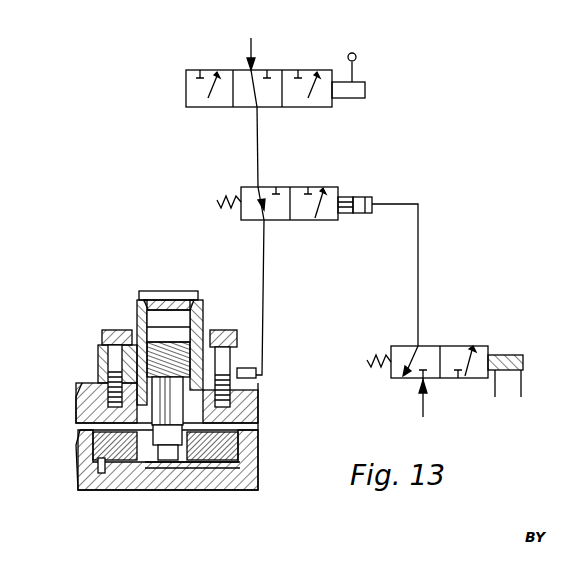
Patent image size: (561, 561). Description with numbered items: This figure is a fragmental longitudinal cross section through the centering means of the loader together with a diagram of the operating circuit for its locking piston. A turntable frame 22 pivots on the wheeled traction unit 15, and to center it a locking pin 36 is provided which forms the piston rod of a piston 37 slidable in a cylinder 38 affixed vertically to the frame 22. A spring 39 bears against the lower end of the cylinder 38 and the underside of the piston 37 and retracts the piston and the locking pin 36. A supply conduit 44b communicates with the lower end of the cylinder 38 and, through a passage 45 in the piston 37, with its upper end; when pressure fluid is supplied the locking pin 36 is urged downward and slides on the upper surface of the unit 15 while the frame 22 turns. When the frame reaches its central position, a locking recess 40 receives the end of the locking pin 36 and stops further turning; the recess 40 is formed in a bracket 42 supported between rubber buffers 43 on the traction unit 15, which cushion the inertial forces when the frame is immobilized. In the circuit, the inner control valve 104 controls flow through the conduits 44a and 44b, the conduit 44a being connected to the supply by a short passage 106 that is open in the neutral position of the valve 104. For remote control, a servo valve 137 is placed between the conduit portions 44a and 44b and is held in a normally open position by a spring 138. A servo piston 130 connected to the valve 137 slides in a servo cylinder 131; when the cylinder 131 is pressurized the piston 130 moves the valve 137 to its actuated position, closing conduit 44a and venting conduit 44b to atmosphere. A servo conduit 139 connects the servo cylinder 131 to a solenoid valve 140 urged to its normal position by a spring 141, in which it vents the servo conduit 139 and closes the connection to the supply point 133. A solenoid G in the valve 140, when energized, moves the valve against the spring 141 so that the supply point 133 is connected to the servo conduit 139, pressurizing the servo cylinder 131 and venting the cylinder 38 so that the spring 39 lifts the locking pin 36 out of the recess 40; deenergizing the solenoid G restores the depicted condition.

The inner control valve 104 is at (309, 100).
The short passage 106 is at (270, 38).
The conduit 44a is at (260, 150).
The supply conduit 44b is at (265, 280).
The servo valve 137 is at (328, 210).
The spring 138 is at (237, 206).
The servo piston 130 is at (353, 202).
The servo cylinder 131 is at (372, 198).
The servo conduit 139 is at (421, 288).
The solenoid valve 140 is at (466, 368).
The spring 141 is at (380, 353).
The connection point 133 is at (418, 410).
The solenoid G is at (512, 358).
The turntable frame 22 is at (228, 397).
The wheeled traction unit 15 is at (245, 478).
The rubber buffers 43 is at (95, 447).
The locking pin 36 is at (257, 408).
The passage 45 is at (150, 330).
The spring 39 is at (147, 362).
The piston 37 is at (183, 330).
The cylinder 38 is at (140, 312).
The locking recess 40 is at (192, 467).
The bracket 42 is at (142, 456).